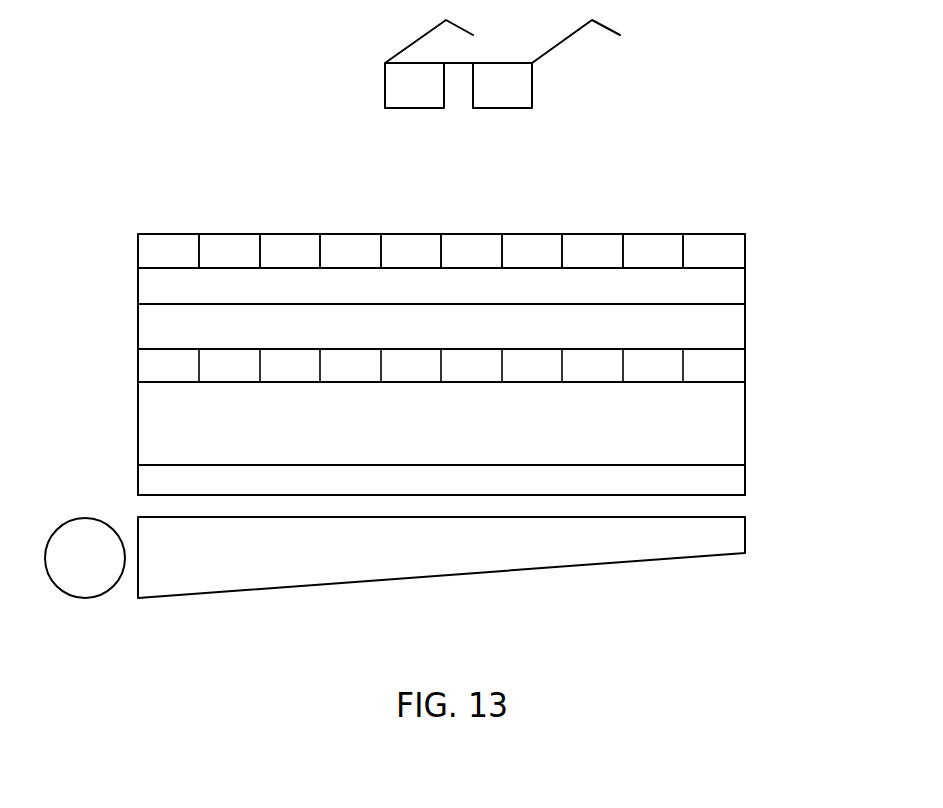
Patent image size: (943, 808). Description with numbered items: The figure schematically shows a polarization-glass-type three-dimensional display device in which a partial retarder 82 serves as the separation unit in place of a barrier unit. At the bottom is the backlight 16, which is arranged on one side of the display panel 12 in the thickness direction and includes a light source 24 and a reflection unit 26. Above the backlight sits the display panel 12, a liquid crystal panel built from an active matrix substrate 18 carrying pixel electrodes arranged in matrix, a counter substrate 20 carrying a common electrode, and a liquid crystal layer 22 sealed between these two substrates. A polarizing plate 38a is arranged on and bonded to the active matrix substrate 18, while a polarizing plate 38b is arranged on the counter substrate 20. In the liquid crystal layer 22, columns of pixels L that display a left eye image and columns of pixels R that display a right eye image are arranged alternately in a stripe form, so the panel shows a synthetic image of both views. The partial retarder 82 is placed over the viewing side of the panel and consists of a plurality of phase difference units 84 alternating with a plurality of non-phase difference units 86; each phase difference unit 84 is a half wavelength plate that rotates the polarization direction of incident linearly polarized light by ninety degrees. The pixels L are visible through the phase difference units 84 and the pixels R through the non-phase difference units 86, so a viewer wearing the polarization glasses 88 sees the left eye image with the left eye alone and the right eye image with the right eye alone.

The display panel 12 is at (485, 384).
The backlight 16 is at (395, 596).
The active matrix substrate 18 is at (465, 423).
The counter substrate 20 is at (727, 334).
The liquid crystal layer 22 is at (727, 366).
The light source 24 is at (86, 578).
The reflection unit 26 is at (148, 575).
The polarizing plate 38a is at (727, 483).
The polarizing plate 38b is at (727, 291).
The partial retarder 82 is at (138, 234).
The phase difference unit 84 is at (653, 258).
The non-phase difference unit 86 is at (714, 258).
The polarization glasses 88 is at (385, 63).